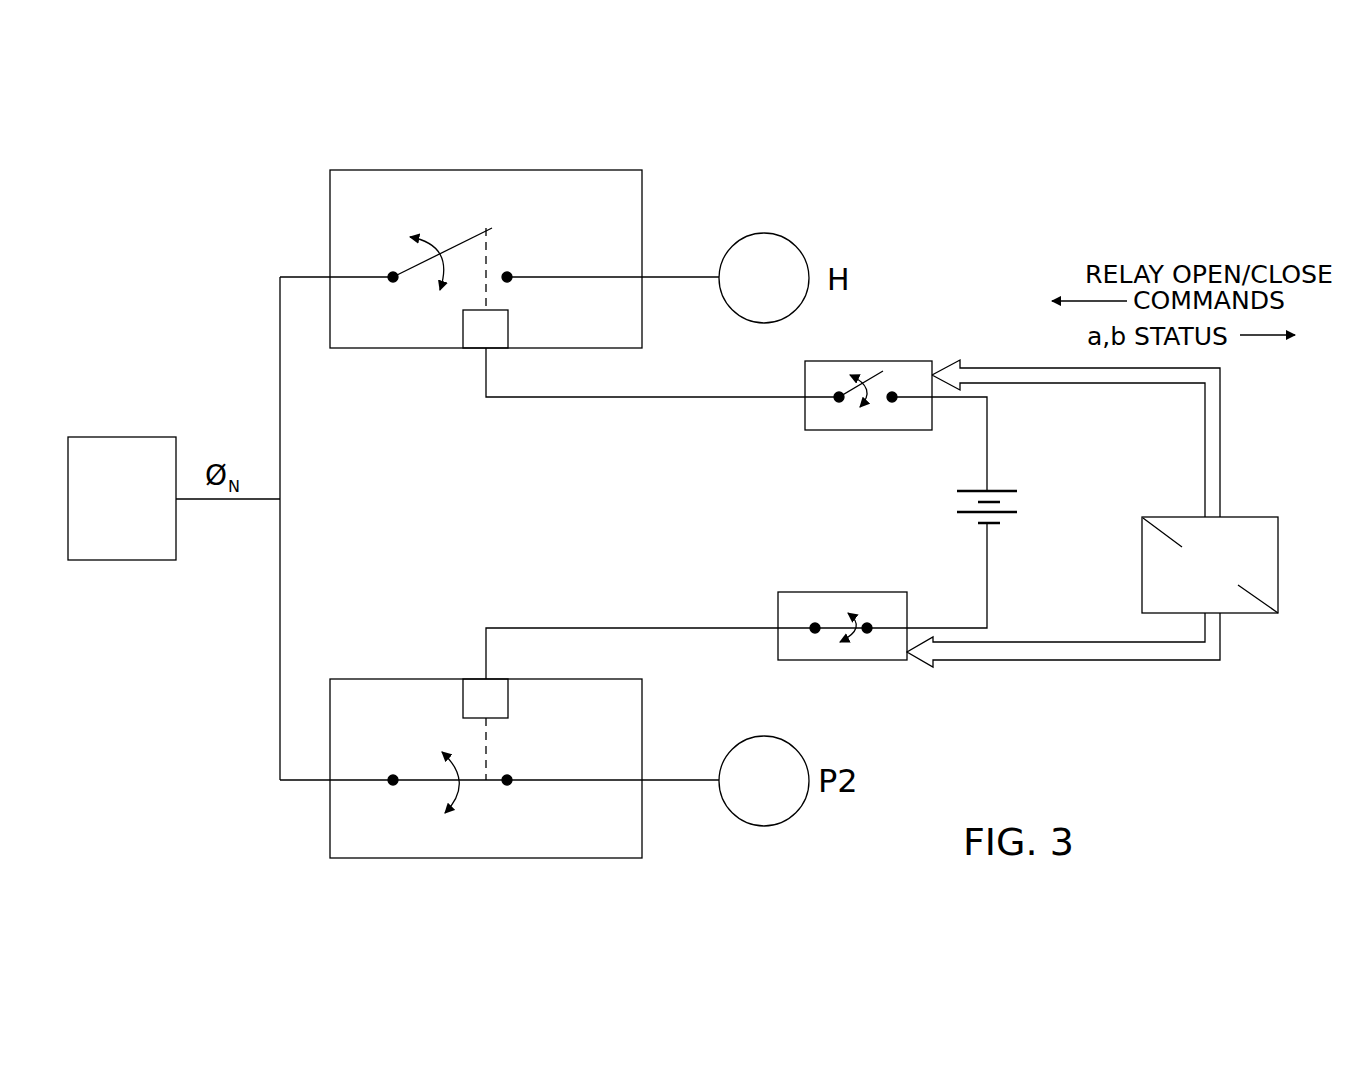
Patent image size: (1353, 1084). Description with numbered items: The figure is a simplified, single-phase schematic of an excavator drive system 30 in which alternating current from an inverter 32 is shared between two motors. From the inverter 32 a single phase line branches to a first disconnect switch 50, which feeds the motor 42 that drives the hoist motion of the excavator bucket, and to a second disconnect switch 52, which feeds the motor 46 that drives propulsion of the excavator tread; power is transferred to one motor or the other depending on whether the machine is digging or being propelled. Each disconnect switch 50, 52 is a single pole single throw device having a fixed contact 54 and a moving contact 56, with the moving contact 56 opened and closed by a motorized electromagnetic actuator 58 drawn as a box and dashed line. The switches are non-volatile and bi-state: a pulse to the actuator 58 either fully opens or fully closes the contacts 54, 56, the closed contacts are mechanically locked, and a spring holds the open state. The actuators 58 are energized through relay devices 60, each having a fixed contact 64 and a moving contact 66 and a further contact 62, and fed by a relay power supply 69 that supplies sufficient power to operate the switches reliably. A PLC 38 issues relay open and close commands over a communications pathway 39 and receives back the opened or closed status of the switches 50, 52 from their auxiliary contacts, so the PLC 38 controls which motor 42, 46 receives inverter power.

The drive system 30 is at (206, 230).
The inverter 32 is at (100, 560).
The PLC 38 is at (1250, 517).
The communications pathway 39 is at (1115, 660).
The motor 42 is at (788, 245).
The motor 46 is at (777, 805).
The first disconnect switch 50 is at (343, 183).
The second disconnect switch 52 is at (353, 818).
The fixed contact 54 is at (507, 277).
The moving contact 56 is at (465, 243).
The actuator 58 is at (470, 338).
The relay device 60 is at (910, 365).
The relay contact 62 is at (867, 628).
The fixed contact 64 is at (892, 400).
The moving contact 66 is at (872, 382).
The relay power supply 69 is at (1015, 505).